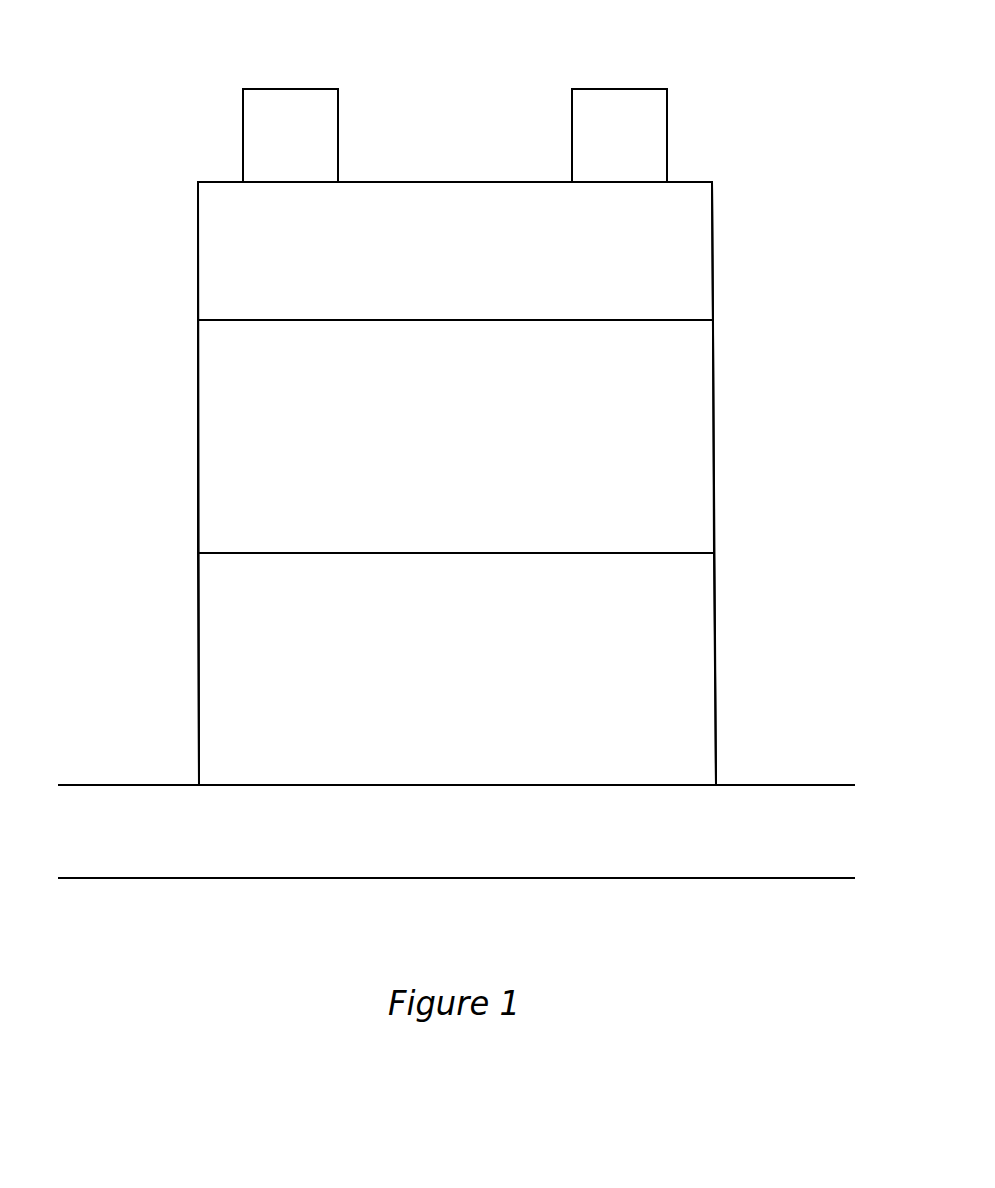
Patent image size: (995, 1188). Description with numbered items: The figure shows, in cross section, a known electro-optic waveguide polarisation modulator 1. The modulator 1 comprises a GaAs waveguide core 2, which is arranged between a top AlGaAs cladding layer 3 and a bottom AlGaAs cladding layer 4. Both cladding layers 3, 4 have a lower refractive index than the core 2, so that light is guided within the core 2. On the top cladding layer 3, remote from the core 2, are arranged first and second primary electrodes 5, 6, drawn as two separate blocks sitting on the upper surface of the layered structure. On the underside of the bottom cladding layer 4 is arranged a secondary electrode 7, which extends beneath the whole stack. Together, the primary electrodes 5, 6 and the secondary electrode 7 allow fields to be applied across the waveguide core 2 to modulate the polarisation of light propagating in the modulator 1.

The electro-optic polarisation modulator 1 is at (160, 342).
The GaAs waveguide core 2 is at (678, 454).
The top AlGaAs cladding layer 3 is at (668, 263).
The bottom AlGaAs cladding layer 4 is at (671, 667).
The first primary electrode 5 is at (270, 117).
The second primary electrode 6 is at (615, 118).
The secondary electrode 7 is at (742, 833).